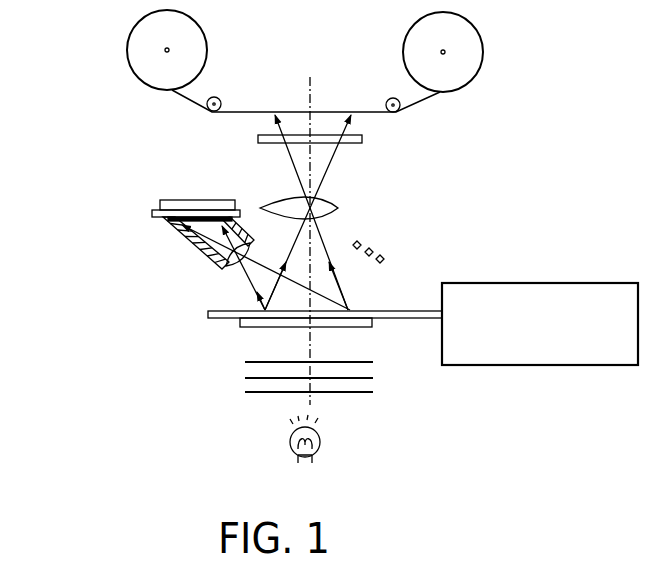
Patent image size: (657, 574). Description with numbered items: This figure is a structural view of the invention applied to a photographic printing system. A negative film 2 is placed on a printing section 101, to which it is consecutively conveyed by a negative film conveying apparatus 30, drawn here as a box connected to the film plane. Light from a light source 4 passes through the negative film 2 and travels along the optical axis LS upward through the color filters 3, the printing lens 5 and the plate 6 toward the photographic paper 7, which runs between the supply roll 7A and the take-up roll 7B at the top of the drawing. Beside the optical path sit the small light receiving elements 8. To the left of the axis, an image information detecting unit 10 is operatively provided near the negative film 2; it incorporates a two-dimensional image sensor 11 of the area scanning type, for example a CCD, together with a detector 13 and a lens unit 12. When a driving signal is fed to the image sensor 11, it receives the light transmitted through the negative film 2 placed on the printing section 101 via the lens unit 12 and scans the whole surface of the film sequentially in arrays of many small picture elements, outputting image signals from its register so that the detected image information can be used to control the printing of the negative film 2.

The negative film 2 is at (348, 311).
The color filters (Y, M, C) 3 is at (383, 358).
The light source 4 is at (320, 445).
The printing lens 5 is at (338, 208).
The shutter / plate 6 is at (362, 143).
The photographic paper 7 is at (244, 112).
The paper supply roll 7A is at (206, 46).
The paper take-up roll 7B is at (483, 58).
The light receiving elements 8 is at (362, 228).
The image information detecting unit 10 is at (153, 257).
The two-dimensional image sensor 11 is at (207, 220).
The lens unit 12 is at (250, 248).
The image sensor detector 13 is at (205, 200).
The negative film conveying apparatus 30 is at (535, 365).
The printing section 101 is at (218, 333).
The optical axis of light source LS is at (330, 70).